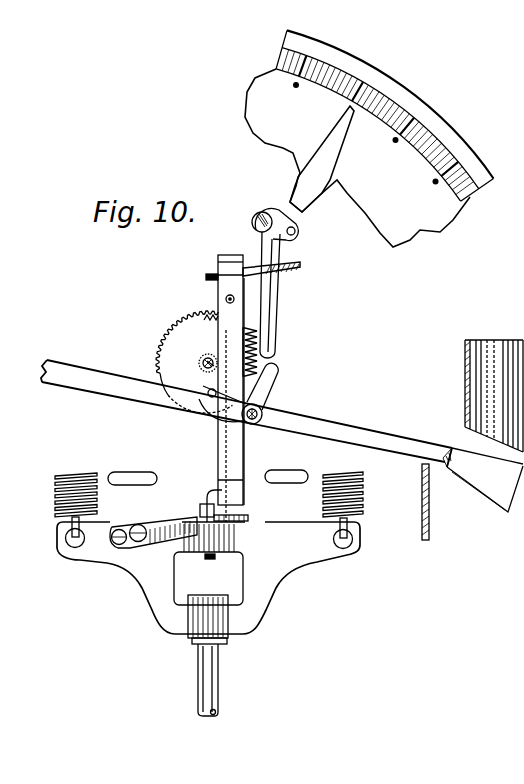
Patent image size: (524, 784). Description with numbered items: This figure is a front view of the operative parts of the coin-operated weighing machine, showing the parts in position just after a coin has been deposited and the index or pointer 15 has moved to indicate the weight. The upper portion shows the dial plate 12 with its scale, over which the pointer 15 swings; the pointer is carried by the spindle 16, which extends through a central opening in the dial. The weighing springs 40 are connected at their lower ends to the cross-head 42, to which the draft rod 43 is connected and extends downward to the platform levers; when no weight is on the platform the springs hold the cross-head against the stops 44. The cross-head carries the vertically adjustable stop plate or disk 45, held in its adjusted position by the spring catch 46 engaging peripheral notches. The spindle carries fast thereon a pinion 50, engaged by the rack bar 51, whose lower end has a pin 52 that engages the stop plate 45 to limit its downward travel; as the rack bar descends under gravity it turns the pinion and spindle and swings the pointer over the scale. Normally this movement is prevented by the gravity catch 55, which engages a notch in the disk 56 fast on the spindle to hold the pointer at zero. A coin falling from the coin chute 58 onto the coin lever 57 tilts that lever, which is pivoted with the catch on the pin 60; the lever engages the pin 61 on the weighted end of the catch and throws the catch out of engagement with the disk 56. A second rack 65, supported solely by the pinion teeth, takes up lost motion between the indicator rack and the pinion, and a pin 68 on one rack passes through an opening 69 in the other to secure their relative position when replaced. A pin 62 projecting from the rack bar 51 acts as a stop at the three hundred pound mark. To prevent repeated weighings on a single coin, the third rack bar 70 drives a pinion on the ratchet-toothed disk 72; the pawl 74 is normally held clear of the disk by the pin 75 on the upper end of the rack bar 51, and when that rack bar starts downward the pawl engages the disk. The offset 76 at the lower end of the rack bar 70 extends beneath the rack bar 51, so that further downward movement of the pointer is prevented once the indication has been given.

The dial plate 12 is at (427, 102).
The index or pointer 15 is at (292, 191).
The spindle 16 is at (205, 366).
The weighing springs 40 is at (56, 490).
The cross-head 42 is at (208, 583).
The draft rod 43 is at (222, 680).
The stops 44 is at (142, 472).
The stop plate or disk 45 is at (246, 518).
The spring catch 46 is at (160, 524).
The pinion 50 is at (207, 358).
The rack bar 51 is at (218, 265).
The pin 52 is at (208, 495).
The gravity catch 55 is at (274, 386).
The disk 56 is at (159, 363).
The coin lever 57 is at (333, 428).
The coin chute 58 is at (487, 347).
The pin 60 is at (256, 424).
The pin 61 is at (209, 395).
The pin 62 is at (206, 276).
The second rack 65 is at (239, 345).
The pin 68 is at (226, 300).
The opening 69 is at (227, 296).
The third rack bar 70 is at (240, 256).
The disk 72 is at (204, 318).
The pawl 74 is at (276, 340).
The pin 75 is at (301, 267).
The offset 76 is at (200, 508).